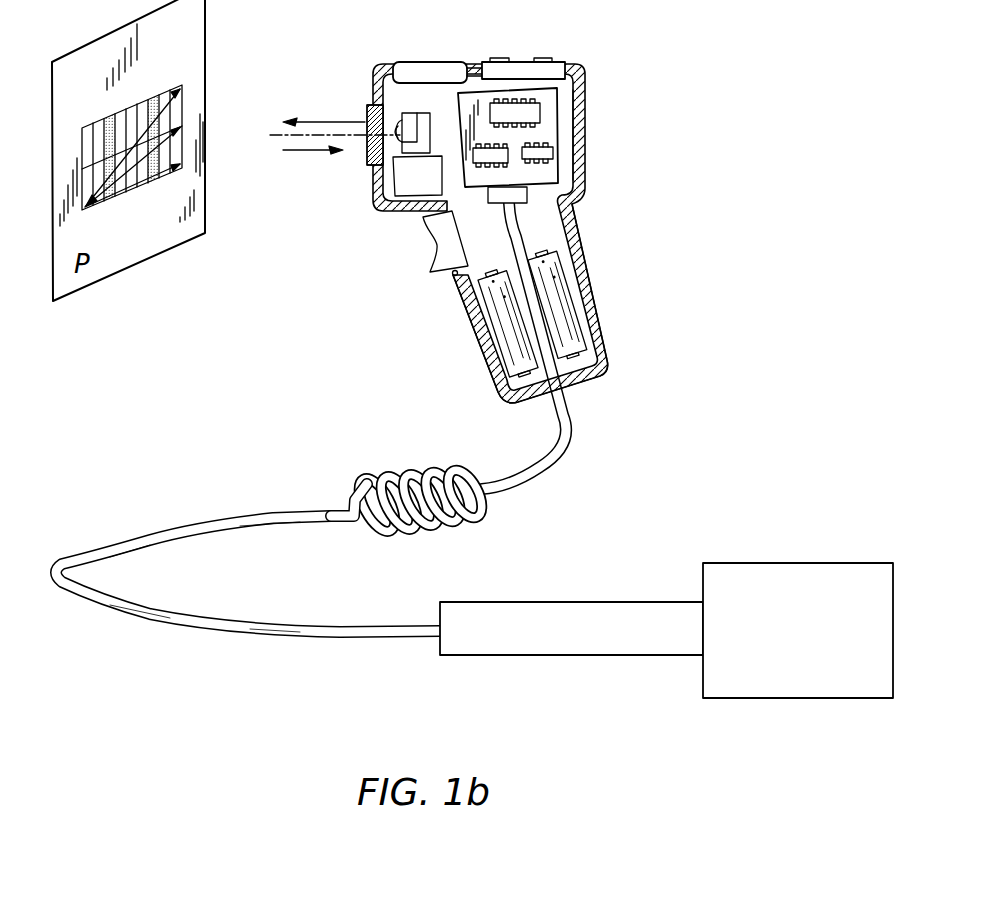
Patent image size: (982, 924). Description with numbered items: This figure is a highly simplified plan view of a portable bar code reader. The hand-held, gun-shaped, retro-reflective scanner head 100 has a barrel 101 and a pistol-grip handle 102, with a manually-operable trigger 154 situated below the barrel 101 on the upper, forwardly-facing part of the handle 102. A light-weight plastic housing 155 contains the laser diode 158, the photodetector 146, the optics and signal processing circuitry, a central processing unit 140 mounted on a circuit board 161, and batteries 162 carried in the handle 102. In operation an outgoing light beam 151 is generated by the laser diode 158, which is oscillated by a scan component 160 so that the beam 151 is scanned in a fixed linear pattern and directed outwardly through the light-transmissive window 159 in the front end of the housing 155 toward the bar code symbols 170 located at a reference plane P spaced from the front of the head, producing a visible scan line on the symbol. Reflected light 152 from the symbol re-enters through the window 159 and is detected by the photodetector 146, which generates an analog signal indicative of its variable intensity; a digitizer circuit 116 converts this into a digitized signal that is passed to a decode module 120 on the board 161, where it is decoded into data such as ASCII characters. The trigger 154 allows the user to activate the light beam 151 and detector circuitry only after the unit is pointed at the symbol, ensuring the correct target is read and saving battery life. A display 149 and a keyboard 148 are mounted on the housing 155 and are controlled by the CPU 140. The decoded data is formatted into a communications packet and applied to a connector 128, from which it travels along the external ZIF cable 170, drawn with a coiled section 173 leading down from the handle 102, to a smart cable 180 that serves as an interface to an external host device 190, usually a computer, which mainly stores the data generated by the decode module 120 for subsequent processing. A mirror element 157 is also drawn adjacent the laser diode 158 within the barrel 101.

The scanner head 100 is at (327, 272).
The barrel 101 is at (580, 76).
The pistol-grip handle 102 is at (586, 266).
The digitizer circuit 116 is at (507, 147).
The decode module 120 is at (552, 156).
The connector 128 is at (511, 204).
The central processing unit 140 is at (495, 112).
The photodetector 146 is at (378, 179).
The keyboard 148 is at (521, 62).
The display 149 is at (427, 72).
The outgoing light beam 151 is at (313, 117).
The reflected light 152 is at (320, 151).
The trigger 154 is at (433, 243).
The housing 155 is at (580, 143).
The scanning mirror 157 is at (405, 125).
The laser diode 158 is at (421, 123).
The window 159 is at (367, 117).
The scan component 160 is at (408, 188).
The circuit board 161 is at (563, 103).
The batteries 162 is at (587, 328).
The external cable 170 is at (132, 103).
The coiled cable 173 is at (420, 480).
The smart cable 180 is at (652, 602).
The host device 190 is at (835, 562).